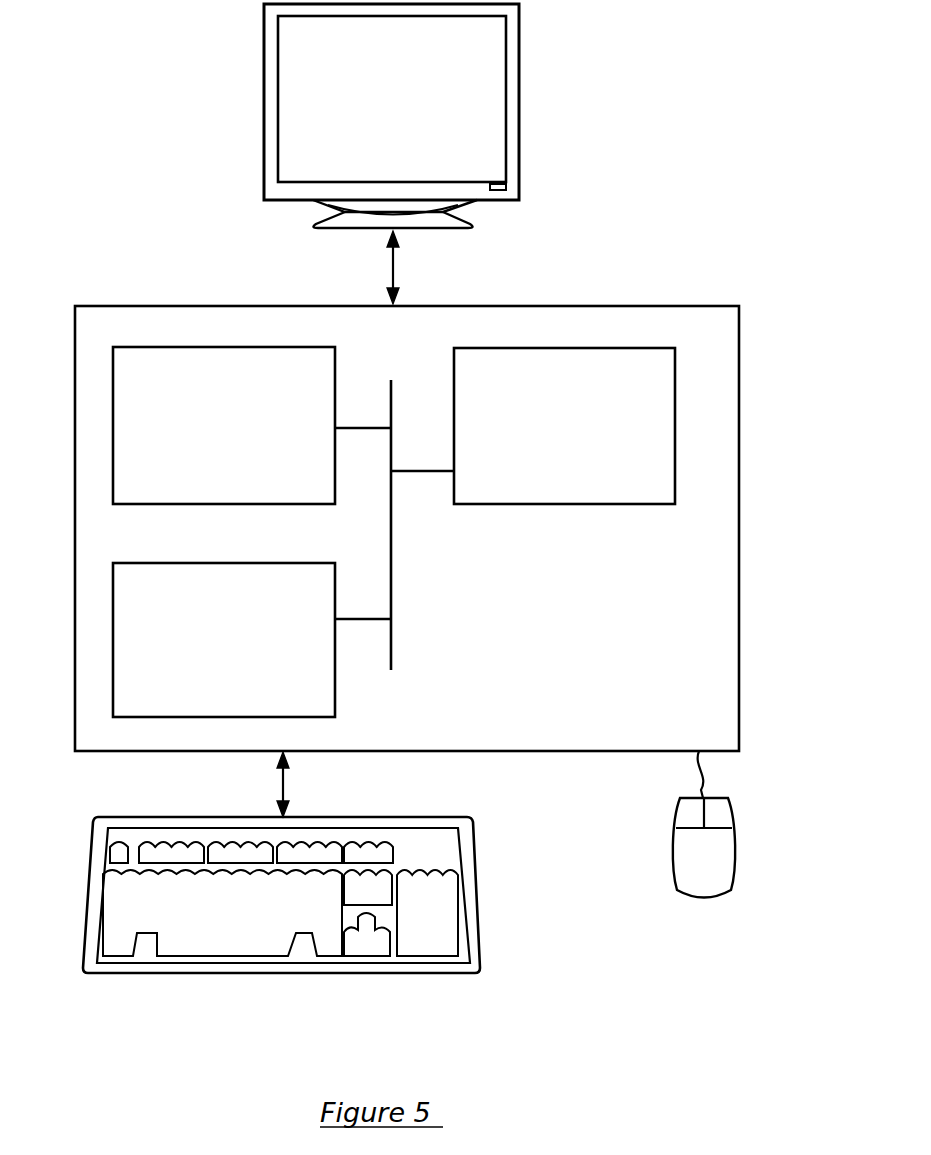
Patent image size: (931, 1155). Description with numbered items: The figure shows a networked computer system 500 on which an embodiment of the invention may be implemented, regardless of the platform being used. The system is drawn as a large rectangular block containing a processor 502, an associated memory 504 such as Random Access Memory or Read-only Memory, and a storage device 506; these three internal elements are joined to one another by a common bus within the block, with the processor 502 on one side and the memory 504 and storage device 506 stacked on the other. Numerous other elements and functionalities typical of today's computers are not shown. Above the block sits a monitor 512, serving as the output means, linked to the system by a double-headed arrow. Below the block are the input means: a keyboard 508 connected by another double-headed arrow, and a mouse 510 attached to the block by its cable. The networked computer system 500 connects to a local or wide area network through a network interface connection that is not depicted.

The networked computer system 500 is at (618, 88).
The processor 502 is at (544, 424).
The memory 504 is at (201, 426).
The storage device 506 is at (202, 641).
The keyboard 508 is at (199, 907).
The mouse 510 is at (736, 904).
The monitor 512 is at (372, 111).